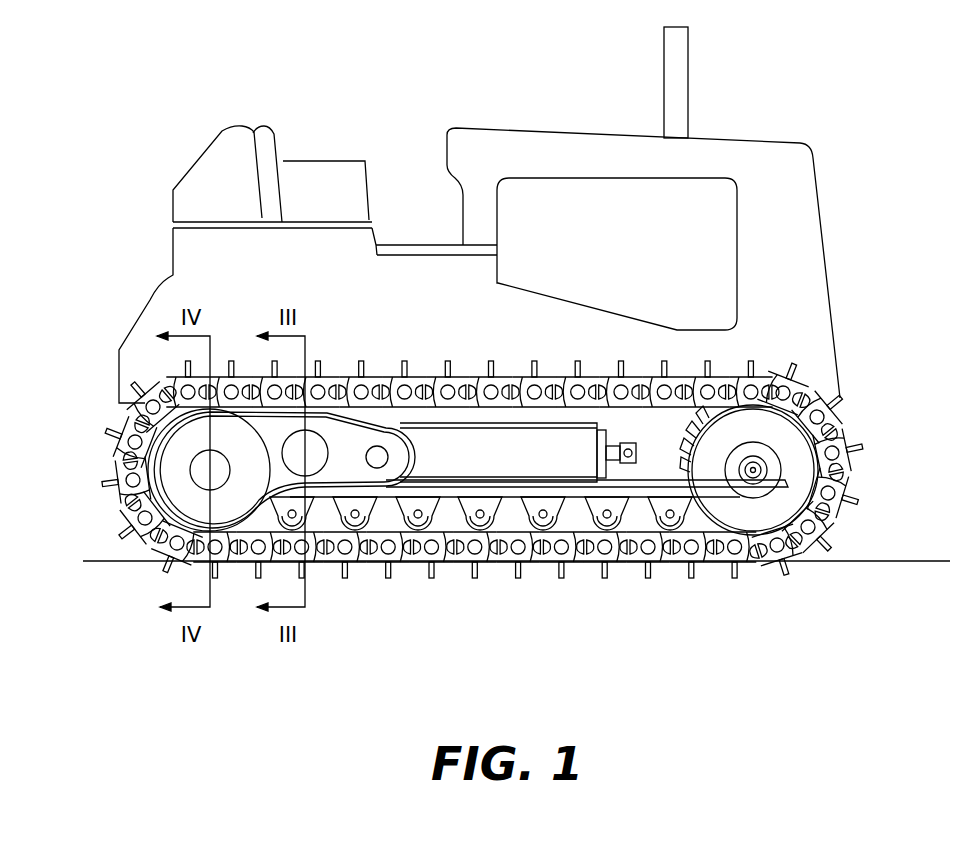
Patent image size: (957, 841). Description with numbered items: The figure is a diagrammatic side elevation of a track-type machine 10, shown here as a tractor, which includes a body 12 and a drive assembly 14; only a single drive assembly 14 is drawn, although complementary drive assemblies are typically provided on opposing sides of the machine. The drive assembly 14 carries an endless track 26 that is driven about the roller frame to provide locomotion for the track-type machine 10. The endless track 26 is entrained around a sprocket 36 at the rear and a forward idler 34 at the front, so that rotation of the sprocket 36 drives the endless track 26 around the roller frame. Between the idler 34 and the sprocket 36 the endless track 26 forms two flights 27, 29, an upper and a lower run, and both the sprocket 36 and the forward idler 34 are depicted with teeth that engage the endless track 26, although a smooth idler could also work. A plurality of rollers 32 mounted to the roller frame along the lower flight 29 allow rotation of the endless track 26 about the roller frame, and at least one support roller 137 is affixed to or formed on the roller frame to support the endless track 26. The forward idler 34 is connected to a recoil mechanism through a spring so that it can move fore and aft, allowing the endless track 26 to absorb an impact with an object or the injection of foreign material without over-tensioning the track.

The track-type machine 10 is at (488, 322).
The body 12 is at (142, 273).
The drive assembly 14 is at (488, 457).
The endless track 26 is at (108, 497).
The flight 27 is at (457, 372).
The flight 29 is at (488, 562).
The rollers 32 is at (400, 530).
The forward idler 34 is at (816, 450).
The sprocket 36 is at (247, 405).
The support roller 137 is at (366, 378).